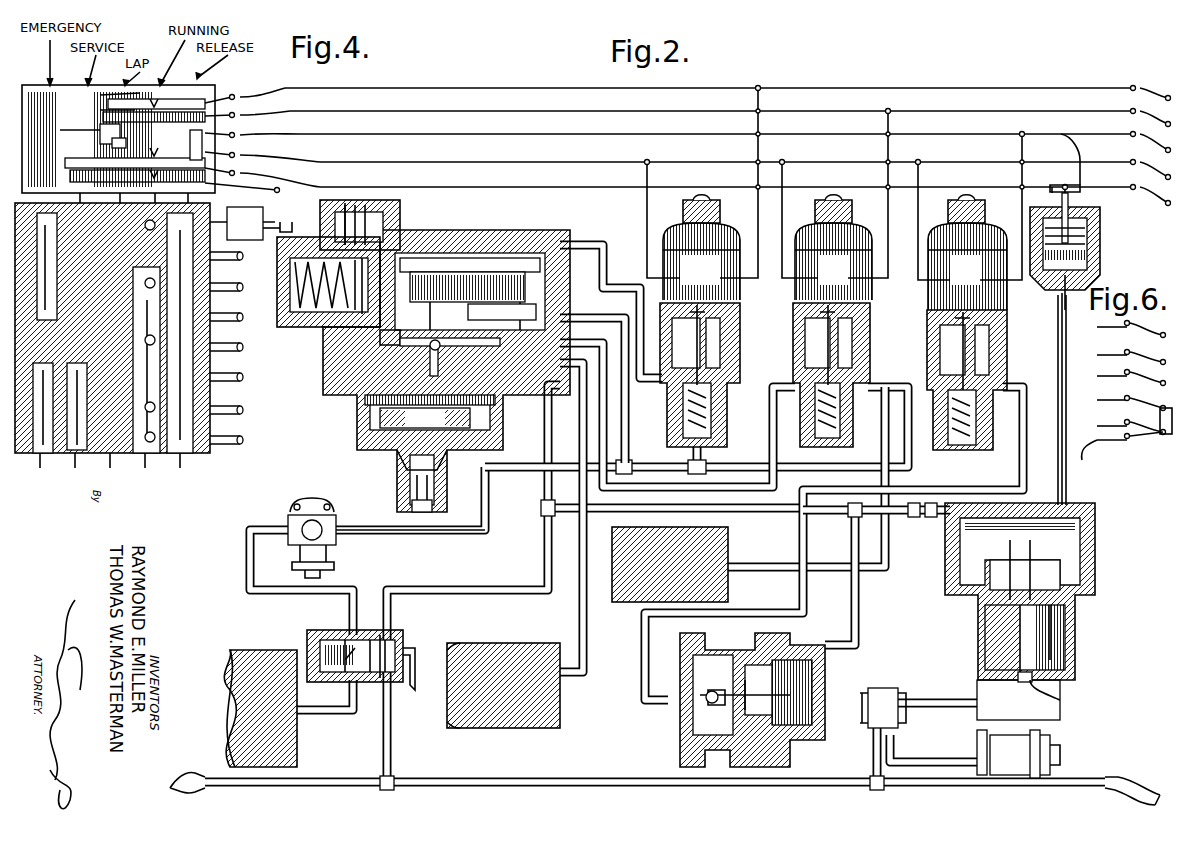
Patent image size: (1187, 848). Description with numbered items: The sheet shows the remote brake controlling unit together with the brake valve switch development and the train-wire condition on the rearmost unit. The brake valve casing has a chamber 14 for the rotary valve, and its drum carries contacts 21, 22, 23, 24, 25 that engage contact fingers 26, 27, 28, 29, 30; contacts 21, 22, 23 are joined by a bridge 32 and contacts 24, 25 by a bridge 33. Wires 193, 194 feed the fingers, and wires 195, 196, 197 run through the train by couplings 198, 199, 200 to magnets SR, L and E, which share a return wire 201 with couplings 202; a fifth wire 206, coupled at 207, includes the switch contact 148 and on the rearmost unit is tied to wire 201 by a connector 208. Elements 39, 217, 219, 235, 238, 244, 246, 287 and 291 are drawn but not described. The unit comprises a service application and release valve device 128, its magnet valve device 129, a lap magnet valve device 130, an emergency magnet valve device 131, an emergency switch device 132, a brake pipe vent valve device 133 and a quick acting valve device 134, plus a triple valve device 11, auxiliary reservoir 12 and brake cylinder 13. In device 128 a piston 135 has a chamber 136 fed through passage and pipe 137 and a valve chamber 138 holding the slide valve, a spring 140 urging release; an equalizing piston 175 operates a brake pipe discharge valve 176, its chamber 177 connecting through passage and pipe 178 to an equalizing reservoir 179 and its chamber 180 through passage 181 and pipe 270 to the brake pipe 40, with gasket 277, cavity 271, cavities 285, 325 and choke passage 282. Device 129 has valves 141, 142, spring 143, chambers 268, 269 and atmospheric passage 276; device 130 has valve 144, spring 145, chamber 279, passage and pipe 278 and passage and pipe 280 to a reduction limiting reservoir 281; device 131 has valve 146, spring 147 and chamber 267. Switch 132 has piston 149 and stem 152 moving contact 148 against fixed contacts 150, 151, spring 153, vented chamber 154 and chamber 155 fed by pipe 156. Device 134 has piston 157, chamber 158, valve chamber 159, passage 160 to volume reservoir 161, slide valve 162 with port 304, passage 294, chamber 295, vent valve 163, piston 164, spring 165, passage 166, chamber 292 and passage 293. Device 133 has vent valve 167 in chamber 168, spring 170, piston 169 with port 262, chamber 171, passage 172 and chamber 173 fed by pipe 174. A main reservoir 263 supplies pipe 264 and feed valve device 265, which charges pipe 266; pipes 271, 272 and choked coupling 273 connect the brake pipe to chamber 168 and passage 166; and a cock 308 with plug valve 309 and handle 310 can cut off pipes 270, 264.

In FIG. 2, the triple valve device 11 is at (870, 730).
In FIG. 2, the auxiliary reservoir 12 is at (1060, 712).
In FIG. 2, the brake cylinder 13 is at (1042, 738).
In FIG. 4, the chamber 14 is at (242, 213).
In FIG. 4, the contact 21 is at (100, 100).
In FIG. 4, the contact 22 is at (100, 128).
In FIG. 4, the contact 23 is at (112, 143).
In FIG. 4, the contact 24 is at (65, 162).
In FIG. 4, the contact 25 is at (112, 335).
In FIG. 4, the contact finger 26 is at (160, 97).
In FIG. 4, the contact finger 27 is at (200, 99).
In FIG. 4, the contact finger 28 is at (242, 136).
In FIG. 4, the contact finger 29 is at (164, 142).
In FIG. 4, the contact finger 30 is at (200, 144).
In FIG. 4, the bridge 32 is at (100, 132).
In FIG. 4, the bridge 33 is at (70, 176).
In FIG. 4, the pipe 39 is at (233, 259).
In FIG. 2, the brake pipe 40 is at (325, 778).
In FIG. 2, the service application and release valve device 128 is at (475, 228).
In FIG. 2, the service application and release magnet valve device 129 is at (673, 225).
In FIG. 2, the lap magnet valve device 130 is at (808, 225).
In FIG. 2, the emergency magnet valve device 131 is at (943, 225).
In FIG. 2, the emergency switch device 132 is at (1043, 217).
In FIG. 2, the brake pipe vent valve device 133 is at (790, 760).
In FIG. 2, the quick acting valve device 134 is at (392, 328).
In FIG. 2, the piston 135 is at (378, 215).
In FIG. 2, the chamber 136 is at (350, 215).
In FIG. 4, the passage and pipe 137 is at (293, 222).
In FIG. 2, the passage and pipe 137 is at (644, 385).
In FIG. 2, the valve chamber 138 is at (505, 260).
In FIG. 2, the spring 140 is at (372, 268).
In FIG. 2, the valve 141 is at (730, 318).
In FIG. 2, the valve 142 is at (718, 392).
In FIG. 2, the spring 143 is at (715, 422).
In FIG. 2, the valve 144 is at (860, 318).
In FIG. 2, the spring 145 is at (850, 372).
In FIG. 2, the valve 146 is at (1000, 320).
In FIG. 2, the spring 147 is at (990, 380).
In FIG. 2, the movable contact 148 is at (1065, 185).
In FIG. 2, the piston 149 is at (1088, 255).
In FIG. 2, the fixed contact 150 is at (1055, 190).
In FIG. 2, the fixed contact 151 is at (1076, 140).
In FIG. 2, the stem 152 is at (1070, 207).
In FIG. 2, the spring 153 is at (1095, 228).
In FIG. 2, the vented chamber 154 is at (1088, 240).
In FIG. 2, the chamber 155 is at (1088, 268).
In FIG. 2, the pipe 156 is at (1062, 340).
In FIG. 2, the piston 157 is at (1070, 565).
In FIG. 2, the chamber 158 is at (1080, 548).
In FIG. 2, the valve chamber 159 is at (1095, 590).
In FIG. 2, the passage 160 is at (1075, 575).
In FIG. 2, the volume reservoir 161 is at (1080, 520).
In FIG. 2, the slide valve 162 is at (1070, 595).
In FIG. 2, the vent valve 163 is at (1018, 678).
In FIG. 2, the piston 164 is at (1060, 680).
In FIG. 2, the spring 165 is at (985, 660).
In FIG. 2, the passage 166 is at (985, 640).
In FIG. 2, the vent valve 167 is at (800, 720).
In FIG. 2, the chamber 168 is at (812, 670).
In FIG. 2, the piston 169 is at (720, 745).
In FIG. 2, the spring 170 is at (812, 685).
In FIG. 2, the chamber 171 is at (735, 670).
In FIG. 2, the passage 172 is at (755, 748).
In FIG. 2, the chamber 173 is at (693, 725).
In FIG. 2, the pipe 174 is at (1020, 458).
In FIG. 2, the equalizing piston 175 is at (380, 416).
In FIG. 2, the brake pipe discharge valve 176 is at (400, 482).
In FIG. 2, the chamber 177 is at (365, 399).
In FIG. 2, the passage and pipe 178 is at (456, 351).
In FIG. 2, the equalizing reservoir 179 is at (495, 650).
In FIG. 2, the chamber 180 is at (447, 470).
In FIG. 2, the passage 181 is at (503, 395).
In FIG. 4, the wire 193 is at (254, 161).
In FIG. 4, the wire 194 is at (240, 95).
In FIG. 4, the wire 195 is at (256, 105).
In FIG. 2, the wire 195 is at (712, 88).
In FIG. 6, the wire 195 is at (1121, 323).
In FIG. 4, the wire 196 is at (256, 125).
In FIG. 2, the wire 196 is at (705, 111).
In FIG. 6, the wire 196 is at (1112, 352).
In FIG. 4, the wire 197 is at (256, 145).
In FIG. 2, the wire 197 is at (728, 134).
In FIG. 2, the coupling 198 is at (1148, 86).
In FIG. 6, the coupling 198 is at (1146, 333).
In FIG. 2, the coupling 199 is at (705, 109).
In FIG. 6, the coupling 199 is at (1148, 357).
In FIG. 2, the coupling 200 is at (705, 134).
In FIG. 6, the coupling 200 is at (1133, 378).
In FIG. 2, the common return wire 201 is at (730, 162).
In FIG. 2, the coupling 202 is at (705, 159).
In FIG. 6, the coupling 202 is at (1135, 402).
In FIG. 2, the fifth wire 206 is at (858, 187).
In FIG. 6, the fifth wire 206 is at (1090, 453).
In FIG. 2, the coupling 207 is at (705, 185).
In FIG. 6, the coupling 207 is at (1130, 425).
In FIG. 6, the connector 208 is at (1128, 438).
In FIG. 4, the pipe 217 is at (281, 212).
In FIG. 4, the pipe 219 is at (231, 279).
In FIG. 4, the pipe 235 is at (238, 417).
In FIG. 4, the pipe 238 is at (231, 333).
In FIG. 4, the pipe 244 is at (240, 390).
In FIG. 4, the pipe 246 is at (237, 361).
In FIG. 2, the port 262 is at (695, 675).
In FIG. 2, the main reservoir 263 is at (235, 700).
In FIG. 2, the pipe 264 is at (278, 590).
In FIG. 2, the feed valve device 265 is at (280, 515).
In FIG. 2, the pipe 266 is at (378, 535).
In FIG. 2, the chamber 267 is at (855, 335).
In FIG. 2, the chamber 268 is at (668, 435).
In FIG. 2, the chamber 269 is at (708, 340).
In FIG. 2, the pipe 270 is at (392, 748).
In FIG. 2, the pipe 271 is at (735, 508).
In FIG. 2, the pipe 272 is at (855, 616).
In FIG. 2, the choked coupling 273 is at (876, 523).
In FIG. 2, the atmospheric passage 276 is at (722, 370).
In FIG. 2, the gasket 277 is at (427, 357).
In FIG. 2, the passage and pipe 278 is at (475, 298).
In FIG. 2, the chamber 279 is at (740, 342).
In FIG. 2, the passage and pipe 280 is at (875, 450).
In FIG. 2, the reduction limiting reservoir 281 is at (710, 553).
In FIG. 2, the choke passage 282 is at (412, 505).
In FIG. 2, the cavity 285 is at (467, 284).
In FIG. 4, the pipe 287 is at (231, 305).
In FIG. 2, the passage 291 is at (985, 605).
In FIG. 2, the chamber 292 is at (1075, 620).
In FIG. 2, the passage 293 is at (1060, 700).
In FIG. 2, the passage 294 is at (985, 620).
In FIG. 2, the chamber 295 is at (1075, 665).
In FIG. 2, the port 304 is at (985, 580).
In FIG. 2, the cock 308 is at (307, 634).
In FIG. 2, the plug valve 309 is at (328, 630).
In FIG. 2, the handle 310 is at (412, 690).
In FIG. 2, the cavity 325 is at (502, 306).